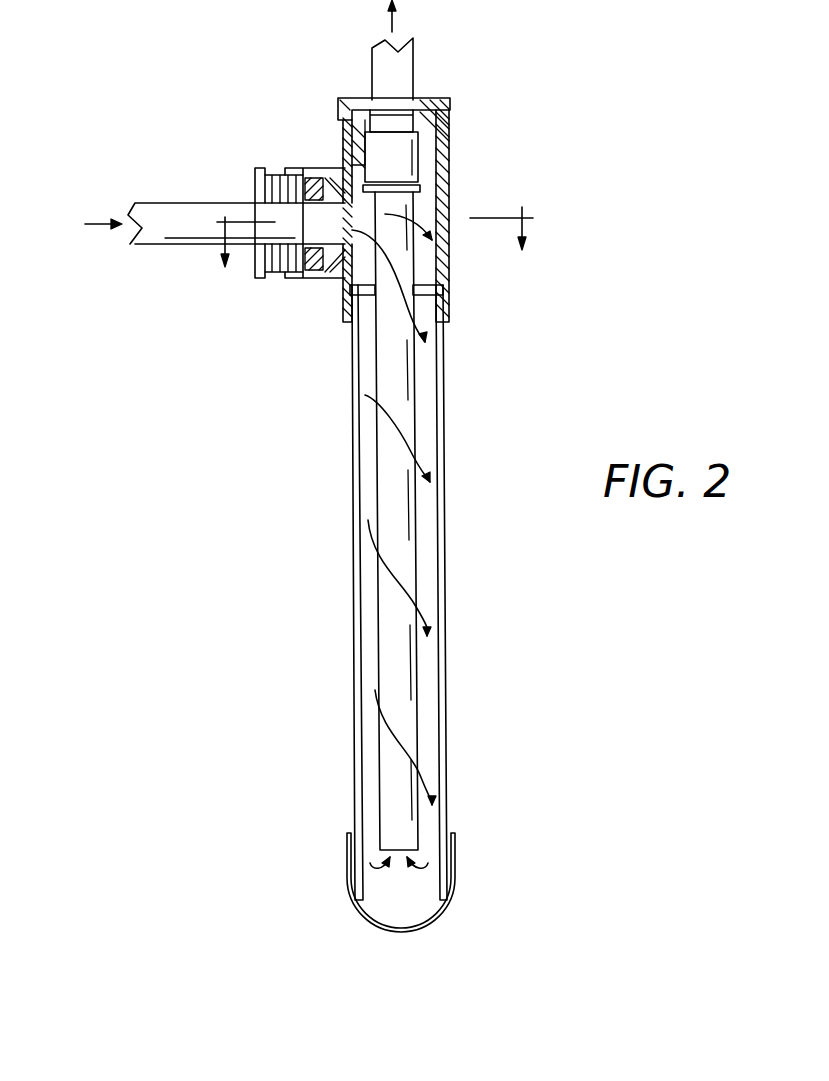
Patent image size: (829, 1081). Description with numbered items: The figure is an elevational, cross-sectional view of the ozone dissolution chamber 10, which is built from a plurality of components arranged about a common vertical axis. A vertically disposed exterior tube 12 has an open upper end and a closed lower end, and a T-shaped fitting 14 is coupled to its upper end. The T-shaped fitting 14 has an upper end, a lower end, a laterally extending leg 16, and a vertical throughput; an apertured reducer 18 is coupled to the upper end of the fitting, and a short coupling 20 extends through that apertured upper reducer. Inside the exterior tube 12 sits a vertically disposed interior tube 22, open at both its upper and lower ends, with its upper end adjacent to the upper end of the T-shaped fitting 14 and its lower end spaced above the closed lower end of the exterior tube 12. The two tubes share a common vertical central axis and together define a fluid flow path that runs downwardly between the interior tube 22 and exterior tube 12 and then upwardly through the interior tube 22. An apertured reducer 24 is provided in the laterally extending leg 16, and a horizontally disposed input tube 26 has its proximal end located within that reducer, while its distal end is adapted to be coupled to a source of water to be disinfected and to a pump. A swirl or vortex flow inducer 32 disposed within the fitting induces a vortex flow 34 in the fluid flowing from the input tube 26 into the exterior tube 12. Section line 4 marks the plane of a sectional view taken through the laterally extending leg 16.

The dissolution chamber 10 is at (157, 78).
The exterior tube 12 is at (445, 523).
The T-shaped fitting 14 is at (452, 243).
The laterally extending leg 16 is at (305, 168).
The apertured reducer 18 is at (443, 97).
The short coupling 20 is at (398, 157).
The interior tube 22 is at (390, 612).
The apertured reducer 24 is at (250, 263).
The input tube 26 is at (197, 213).
The swirl or vortex flow inducer 32 is at (345, 232).
The vortex flow 34 is at (450, 288).
The section line 4- 4 is at (372, 243).